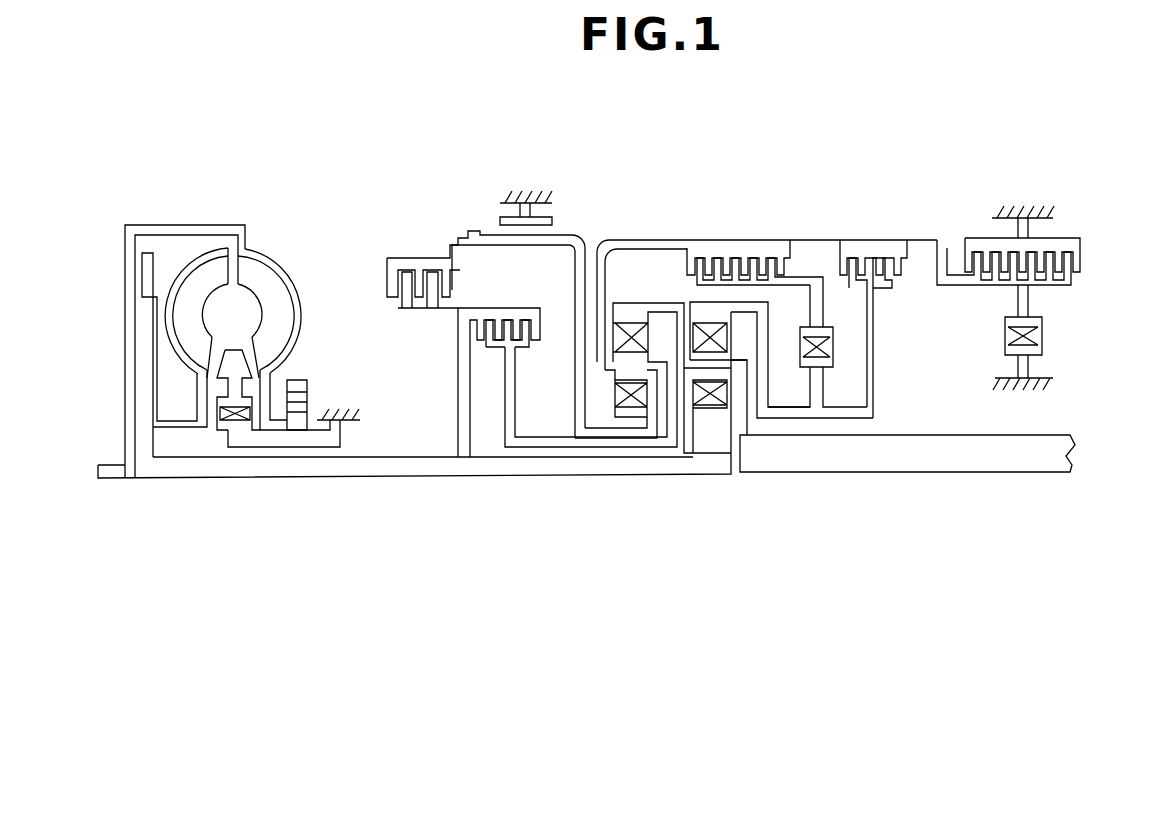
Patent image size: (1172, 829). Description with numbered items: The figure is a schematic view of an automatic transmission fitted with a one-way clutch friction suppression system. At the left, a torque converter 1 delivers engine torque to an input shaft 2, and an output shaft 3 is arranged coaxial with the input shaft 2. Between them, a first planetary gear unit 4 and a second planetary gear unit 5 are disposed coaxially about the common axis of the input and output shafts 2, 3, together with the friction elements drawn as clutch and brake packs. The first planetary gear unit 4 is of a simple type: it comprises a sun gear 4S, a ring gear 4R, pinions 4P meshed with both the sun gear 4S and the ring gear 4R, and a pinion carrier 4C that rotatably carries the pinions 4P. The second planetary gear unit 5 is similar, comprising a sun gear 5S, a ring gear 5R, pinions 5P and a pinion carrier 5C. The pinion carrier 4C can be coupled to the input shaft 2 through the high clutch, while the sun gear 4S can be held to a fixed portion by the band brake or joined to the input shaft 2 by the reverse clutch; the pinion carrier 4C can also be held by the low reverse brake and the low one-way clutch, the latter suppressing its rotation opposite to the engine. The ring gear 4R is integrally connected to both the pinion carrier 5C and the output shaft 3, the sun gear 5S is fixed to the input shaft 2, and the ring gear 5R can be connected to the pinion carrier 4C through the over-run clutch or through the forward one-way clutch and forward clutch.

The torque converter 1 is at (275, 256).
The input shaft 2 is at (402, 462).
The output shaft 3 is at (1000, 455).
The first planetary gear unit 4 is at (656, 300).
The ring gear 4R is at (632, 305).
The pinions 4P is at (612, 378).
The sun gear 4S is at (628, 418).
The pinion carrier 4C is at (647, 363).
The second planetary gear unit 5 is at (722, 415).
The ring gear 5R is at (703, 320).
The pinions 5P is at (687, 380).
The sun gear 5S is at (723, 420).
The pinion carrier 5C is at (745, 363).